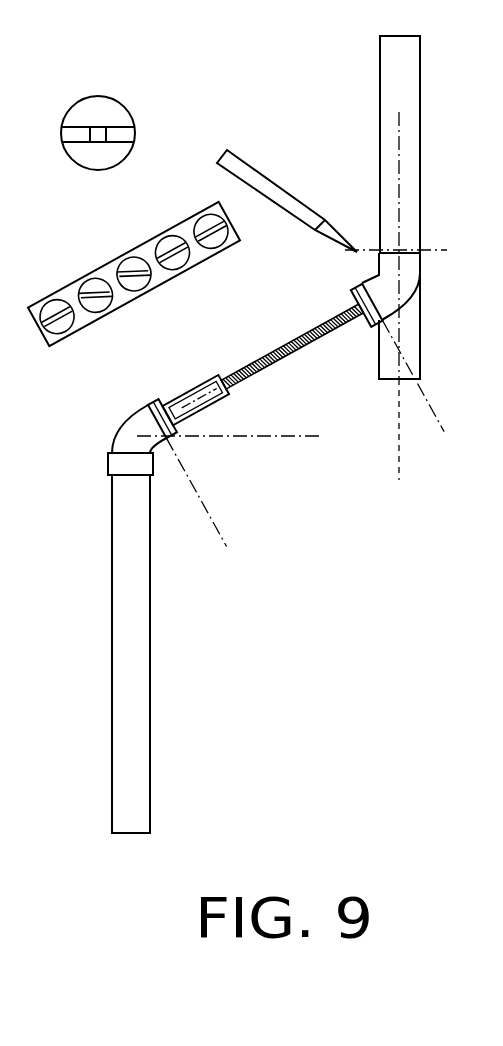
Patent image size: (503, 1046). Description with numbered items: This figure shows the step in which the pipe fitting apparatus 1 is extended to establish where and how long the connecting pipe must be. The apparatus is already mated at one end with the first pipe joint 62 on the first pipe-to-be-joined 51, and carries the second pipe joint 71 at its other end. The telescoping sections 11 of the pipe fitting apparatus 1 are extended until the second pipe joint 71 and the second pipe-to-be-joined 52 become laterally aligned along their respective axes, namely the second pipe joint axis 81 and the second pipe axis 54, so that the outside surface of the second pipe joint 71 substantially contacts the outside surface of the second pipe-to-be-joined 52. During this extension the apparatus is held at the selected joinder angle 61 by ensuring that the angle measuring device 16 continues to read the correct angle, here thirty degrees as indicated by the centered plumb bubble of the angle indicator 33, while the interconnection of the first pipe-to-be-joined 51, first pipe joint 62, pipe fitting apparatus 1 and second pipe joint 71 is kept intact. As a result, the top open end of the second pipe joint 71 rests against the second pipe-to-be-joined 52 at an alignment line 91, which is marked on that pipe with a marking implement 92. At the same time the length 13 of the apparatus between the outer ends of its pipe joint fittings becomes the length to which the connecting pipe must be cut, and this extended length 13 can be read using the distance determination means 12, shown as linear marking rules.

The pipe fitting apparatus 1 is at (337, 453).
The telescoping sections 11 is at (337, 317).
The distance determination means 12 is at (367, 310).
The length 13 is at (305, 435).
The angle measuring device 16 is at (158, 275).
The 30-degree angle indicator 33 is at (137, 258).
The first pipe-to-be-joined 51 is at (128, 700).
The second pipe-to-be-joined 52 is at (399, 72).
The second pipe axis 54 is at (400, 450).
The joinder angle 61 is at (277, 362).
The first pipe joint 62 is at (128, 437).
The second pipe joint 71 is at (400, 308).
The second pipe joint axis 81 is at (399, 136).
The alignment line 91 is at (438, 250).
The marking implement 92 is at (262, 176).